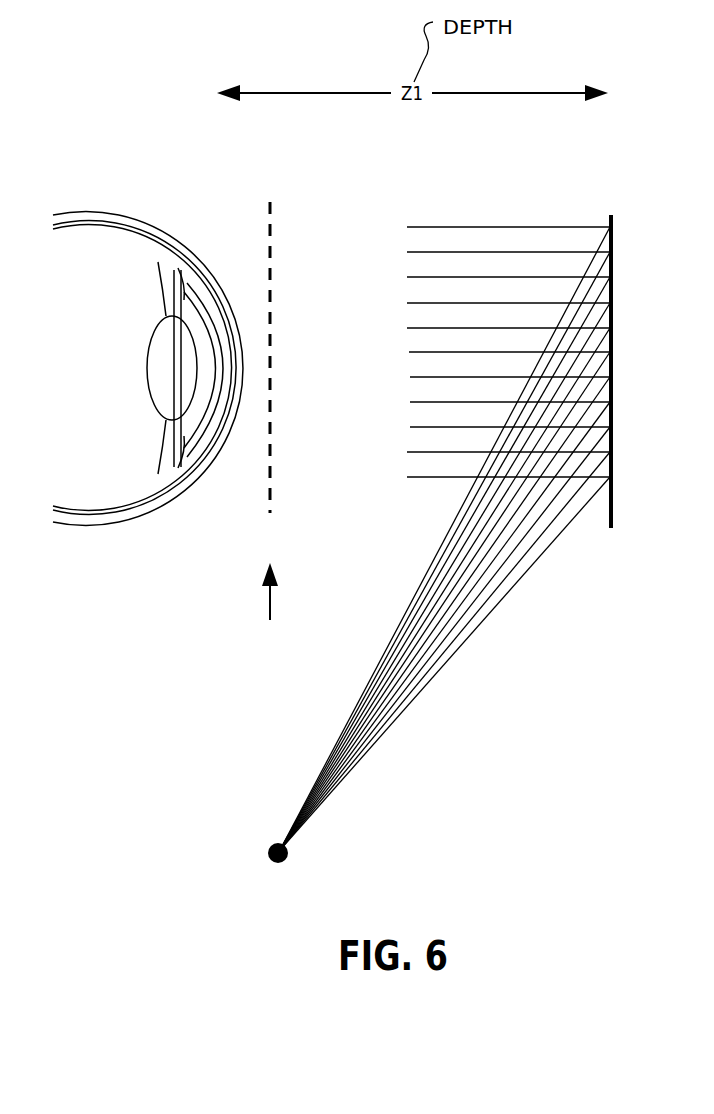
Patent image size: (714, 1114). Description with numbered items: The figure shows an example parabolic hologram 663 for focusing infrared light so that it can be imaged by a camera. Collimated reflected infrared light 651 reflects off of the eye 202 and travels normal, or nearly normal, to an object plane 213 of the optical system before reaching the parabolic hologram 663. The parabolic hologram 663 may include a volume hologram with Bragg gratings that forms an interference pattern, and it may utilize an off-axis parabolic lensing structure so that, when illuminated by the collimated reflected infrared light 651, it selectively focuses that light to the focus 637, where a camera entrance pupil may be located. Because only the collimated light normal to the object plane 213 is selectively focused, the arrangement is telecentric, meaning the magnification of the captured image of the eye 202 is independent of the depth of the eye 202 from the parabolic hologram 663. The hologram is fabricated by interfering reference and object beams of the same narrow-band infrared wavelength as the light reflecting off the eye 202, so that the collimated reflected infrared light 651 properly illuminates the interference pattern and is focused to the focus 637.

The eye 202 is at (73, 213).
The object plane 213 is at (268, 608).
The collimated reflected infrared light 651 is at (612, 193).
The parabolic hologram 663 is at (610, 530).
The focus 637 is at (288, 853).